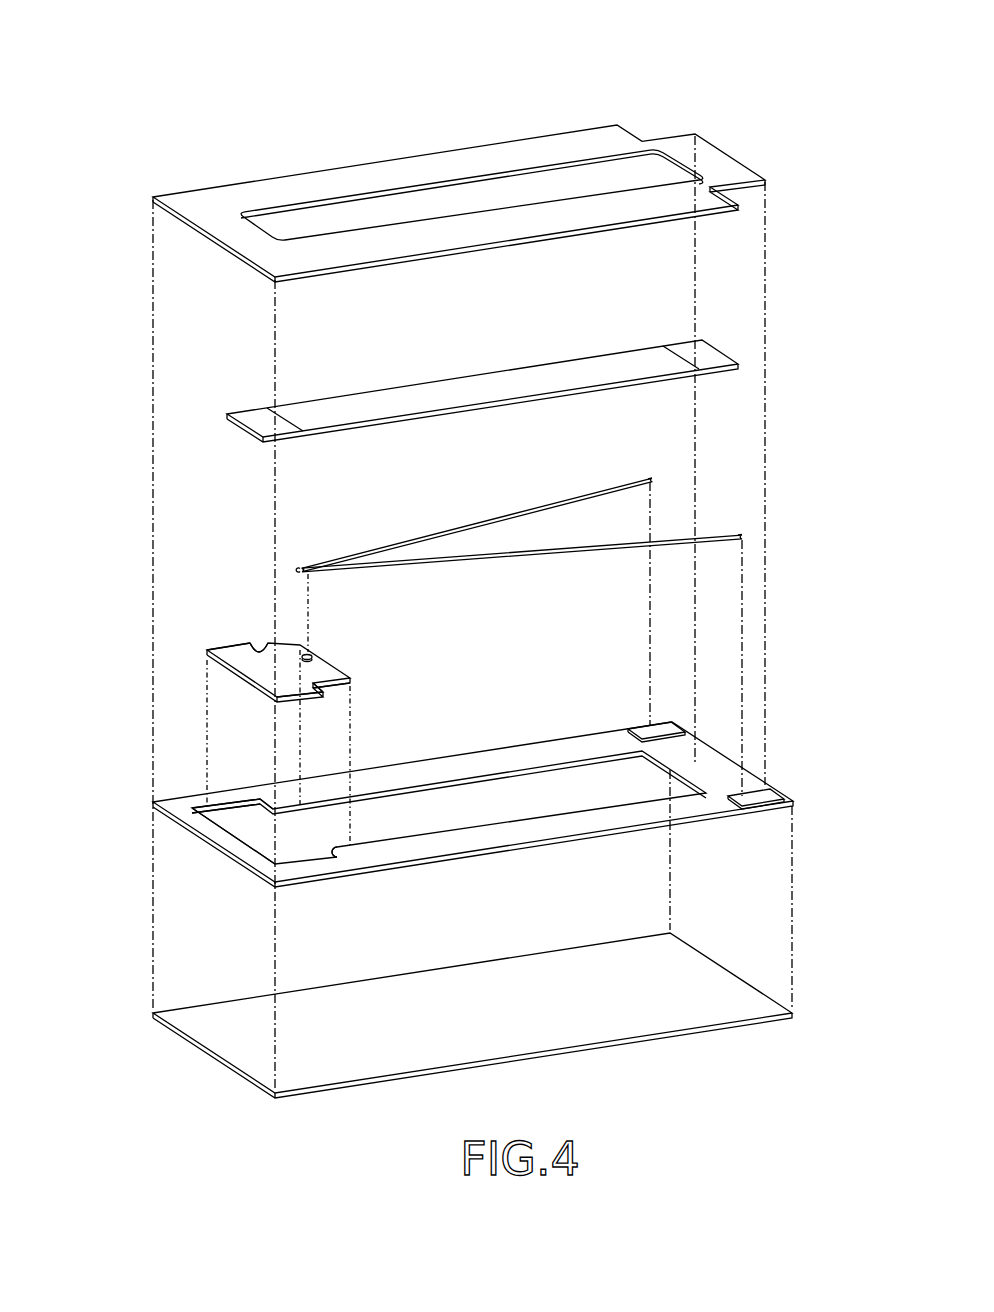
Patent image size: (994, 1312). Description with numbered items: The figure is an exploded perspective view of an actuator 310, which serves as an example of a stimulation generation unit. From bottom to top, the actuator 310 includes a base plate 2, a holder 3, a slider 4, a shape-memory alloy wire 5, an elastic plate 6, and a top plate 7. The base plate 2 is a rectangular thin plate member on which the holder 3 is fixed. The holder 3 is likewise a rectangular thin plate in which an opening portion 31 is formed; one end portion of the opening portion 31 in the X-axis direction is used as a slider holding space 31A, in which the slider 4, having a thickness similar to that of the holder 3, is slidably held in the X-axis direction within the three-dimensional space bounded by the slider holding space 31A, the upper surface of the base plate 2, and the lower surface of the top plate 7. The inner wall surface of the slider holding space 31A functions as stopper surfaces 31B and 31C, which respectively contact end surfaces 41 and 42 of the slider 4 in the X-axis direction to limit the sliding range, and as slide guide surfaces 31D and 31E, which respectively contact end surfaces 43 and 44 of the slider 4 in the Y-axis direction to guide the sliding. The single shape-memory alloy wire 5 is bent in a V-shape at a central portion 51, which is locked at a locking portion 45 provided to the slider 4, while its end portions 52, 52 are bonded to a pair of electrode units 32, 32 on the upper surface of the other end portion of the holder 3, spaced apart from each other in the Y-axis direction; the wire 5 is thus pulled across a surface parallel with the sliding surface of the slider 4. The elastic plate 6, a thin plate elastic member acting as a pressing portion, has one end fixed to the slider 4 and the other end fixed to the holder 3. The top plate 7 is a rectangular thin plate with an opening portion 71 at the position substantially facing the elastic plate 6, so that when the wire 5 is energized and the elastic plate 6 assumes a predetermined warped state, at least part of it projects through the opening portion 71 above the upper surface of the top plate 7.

The actuator 310 is at (489, 34).
The base plate 2 is at (700, 961).
The holder 3 is at (537, 742).
The opening portion 31 is at (470, 832).
The slider holding space 31A is at (233, 820).
The stopper surface 31B is at (243, 843).
The stopper surface 31C is at (260, 800).
The slide guide surface 31D is at (215, 807).
The slide guide surface 31E is at (310, 878).
The electrode unit 32 is at (660, 726).
The slider 4 is at (250, 668).
The end surface 41 is at (260, 692).
The end surface 42 is at (257, 645).
The end surface 43 is at (225, 647).
The end surface 44 is at (310, 700).
The locking portion 45 is at (313, 655).
The shape-memory alloy wire 5 is at (513, 513).
The central portion 51 is at (305, 562).
The end portion 52 is at (652, 476).
The elastic plate 6 is at (603, 356).
The top plate 7 is at (713, 147).
The opening portion 71 is at (507, 171).